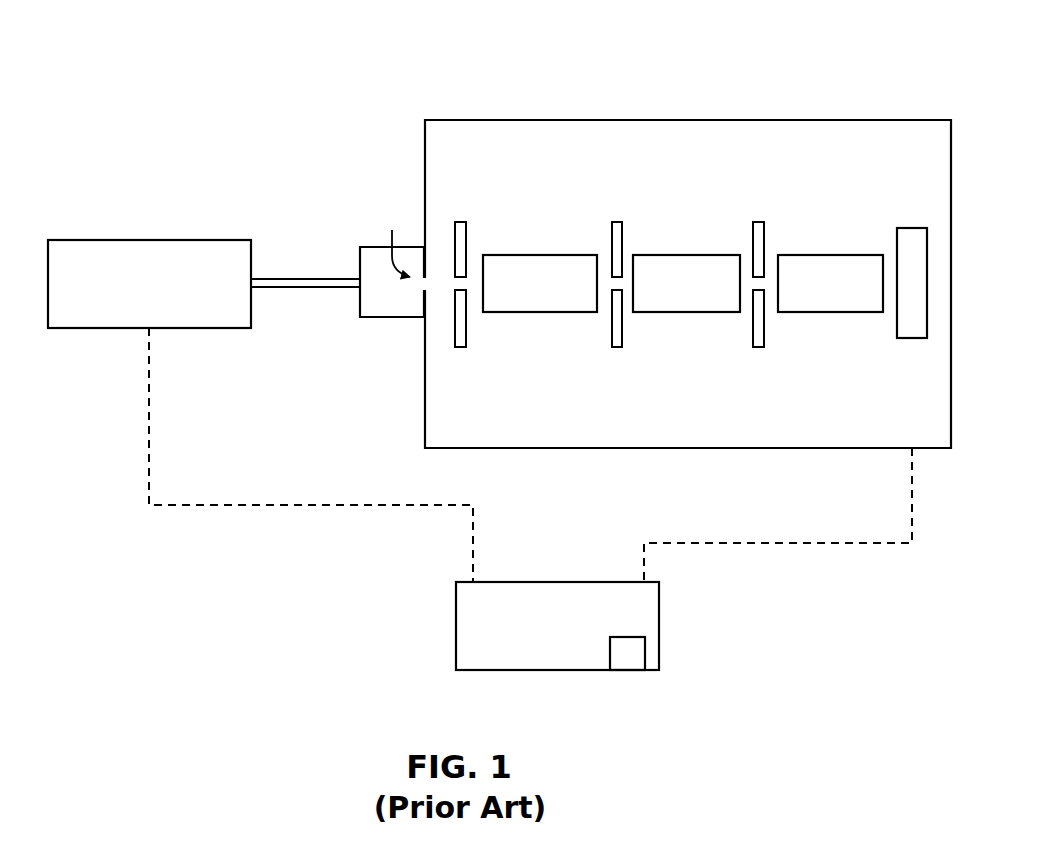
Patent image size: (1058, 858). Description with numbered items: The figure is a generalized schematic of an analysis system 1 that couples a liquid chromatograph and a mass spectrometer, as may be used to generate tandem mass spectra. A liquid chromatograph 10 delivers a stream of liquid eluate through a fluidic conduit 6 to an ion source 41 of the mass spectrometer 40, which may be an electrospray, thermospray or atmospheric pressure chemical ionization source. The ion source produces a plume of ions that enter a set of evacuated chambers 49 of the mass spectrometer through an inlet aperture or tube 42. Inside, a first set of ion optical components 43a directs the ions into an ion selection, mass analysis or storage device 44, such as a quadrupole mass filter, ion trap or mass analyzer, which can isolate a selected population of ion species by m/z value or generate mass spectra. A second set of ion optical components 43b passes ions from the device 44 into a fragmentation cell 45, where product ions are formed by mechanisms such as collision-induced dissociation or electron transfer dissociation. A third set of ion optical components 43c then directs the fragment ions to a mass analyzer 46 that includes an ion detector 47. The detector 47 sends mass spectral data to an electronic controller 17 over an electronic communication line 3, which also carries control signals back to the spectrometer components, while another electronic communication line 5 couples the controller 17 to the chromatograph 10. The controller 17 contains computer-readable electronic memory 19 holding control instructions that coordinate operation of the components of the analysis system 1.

The analysis system 1 is at (84, 38).
The mass spectrometer 40 is at (364, 112).
The liquid chromatograph 10 is at (100, 238).
The fluidic conduit 6 is at (307, 277).
The ion source 41 is at (373, 247).
The inlet aperture or tube 42 is at (392, 230).
The set of ion optical components 43a is at (467, 228).
The second set of ion optical components 43b is at (623, 228).
The third set of ion optical components 43c is at (765, 228).
The ion selection, mass analysis or storage device 44 is at (558, 255).
The fragmentation cell 45 is at (675, 255).
The mass analyzer 46 is at (828, 255).
The ion detector 47 is at (910, 228).
The set of evacuated chambers 49 is at (607, 401).
The electronic communication line 5 is at (245, 505).
The electronic communication line 3 is at (777, 543).
The electronic controller 17 is at (456, 623).
The computer-readable electronic memory 19 is at (627, 658).